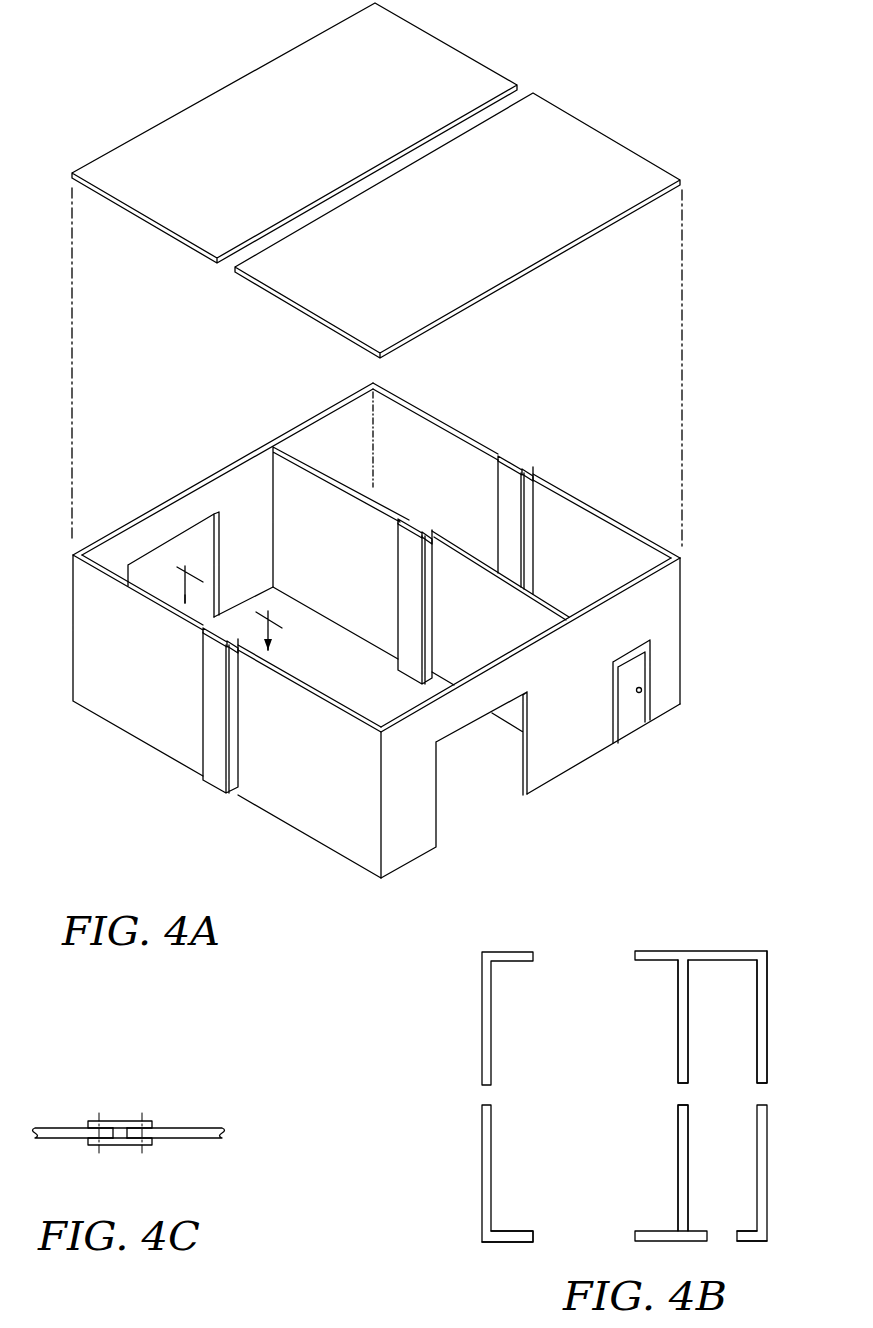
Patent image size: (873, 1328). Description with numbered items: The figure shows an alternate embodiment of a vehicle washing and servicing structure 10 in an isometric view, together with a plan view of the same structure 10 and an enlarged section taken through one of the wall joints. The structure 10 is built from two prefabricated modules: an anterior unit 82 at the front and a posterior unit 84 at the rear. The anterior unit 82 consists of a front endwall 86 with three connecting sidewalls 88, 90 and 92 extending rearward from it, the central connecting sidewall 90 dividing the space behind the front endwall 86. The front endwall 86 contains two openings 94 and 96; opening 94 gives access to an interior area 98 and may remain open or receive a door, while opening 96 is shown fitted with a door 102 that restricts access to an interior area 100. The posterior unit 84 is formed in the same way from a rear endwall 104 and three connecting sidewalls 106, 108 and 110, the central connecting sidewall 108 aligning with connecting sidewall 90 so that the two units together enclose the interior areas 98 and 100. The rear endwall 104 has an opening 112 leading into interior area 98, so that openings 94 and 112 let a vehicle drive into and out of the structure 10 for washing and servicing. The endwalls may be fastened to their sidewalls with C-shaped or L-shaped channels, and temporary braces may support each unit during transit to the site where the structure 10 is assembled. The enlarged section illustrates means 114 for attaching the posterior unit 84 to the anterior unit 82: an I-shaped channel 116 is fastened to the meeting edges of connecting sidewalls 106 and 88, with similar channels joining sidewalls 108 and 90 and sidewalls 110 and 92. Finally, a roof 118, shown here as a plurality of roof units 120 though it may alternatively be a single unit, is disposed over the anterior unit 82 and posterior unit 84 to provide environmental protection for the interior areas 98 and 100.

In FIG. 4A, the structure 10 is at (392, 635).
In FIG. 4B, the structure 10 is at (591, 1094).
In FIG. 4A, the anterior unit 82 is at (474, 680).
In FIG. 4B, the anterior unit 82 is at (612, 1199).
In FIG. 4A, the posterior unit 84 is at (271, 592).
In FIG. 4B, the posterior unit 84 is at (615, 993).
In FIG. 4A, the front endwall 86 is at (562, 773).
In FIG. 4B, the front endwall 86 is at (503, 1243).
In FIG. 4A, the connecting sidewall 88 is at (338, 855).
In FIG. 4B, the connecting sidewall 88 is at (481, 1183).
In FIG. 4C, the connecting sidewall 88 is at (186, 1141).
In FIG. 4A, the connecting sidewall 90 is at (432, 690).
In FIG. 4B, the connecting sidewall 90 is at (677, 1163).
In FIG. 4A, the connecting sidewall 92 is at (598, 510).
In FIG. 4B, the connecting sidewall 92 is at (768, 1177).
In FIG. 4A, the opening 94 is at (470, 809).
In FIG. 4B, the opening 94 is at (576, 1249).
In FIG. 4A, the opening 96 is at (637, 732).
In FIG. 4B, the opening 96 is at (727, 1232).
In FIG. 4A, the interior area 98 is at (318, 671).
In FIG. 4B, the interior area 98 is at (573, 1116).
In FIG. 4A, the interior area 100 is at (388, 444).
In FIG. 4B, the interior area 100 is at (701, 1101).
In FIG. 4A, the door 102 is at (645, 689).
In FIG. 4A, the rear endwall 104 is at (194, 488).
In FIG. 4B, the rear endwall 104 is at (665, 950).
In FIG. 4A, the connecting sidewall 106 is at (90, 712).
In FIG. 4B, the connecting sidewall 106 is at (481, 1027).
In FIG. 4C, the connecting sidewall 106 is at (62, 1141).
In FIG. 4A, the connecting sidewall 108 is at (310, 612).
In FIG. 4B, the connecting sidewall 108 is at (677, 1017).
In FIG. 4A, the connecting sidewall 110 is at (442, 422).
In FIG. 4B, the connecting sidewall 110 is at (767, 1016).
In FIG. 4A, the opening 112 is at (145, 567).
In FIG. 4B, the opening 112 is at (566, 971).
In FIG. 4A, the means for attaching 114 is at (517, 462).
In FIG. 4C, the means for attaching 114 is at (147, 1091).
In FIG. 4C, the I-shaped channel 116 is at (121, 1120).
In FIG. 4A, the roof 118 is at (376, 180).
In FIG. 4A, the roof unit 120 is at (477, 61).